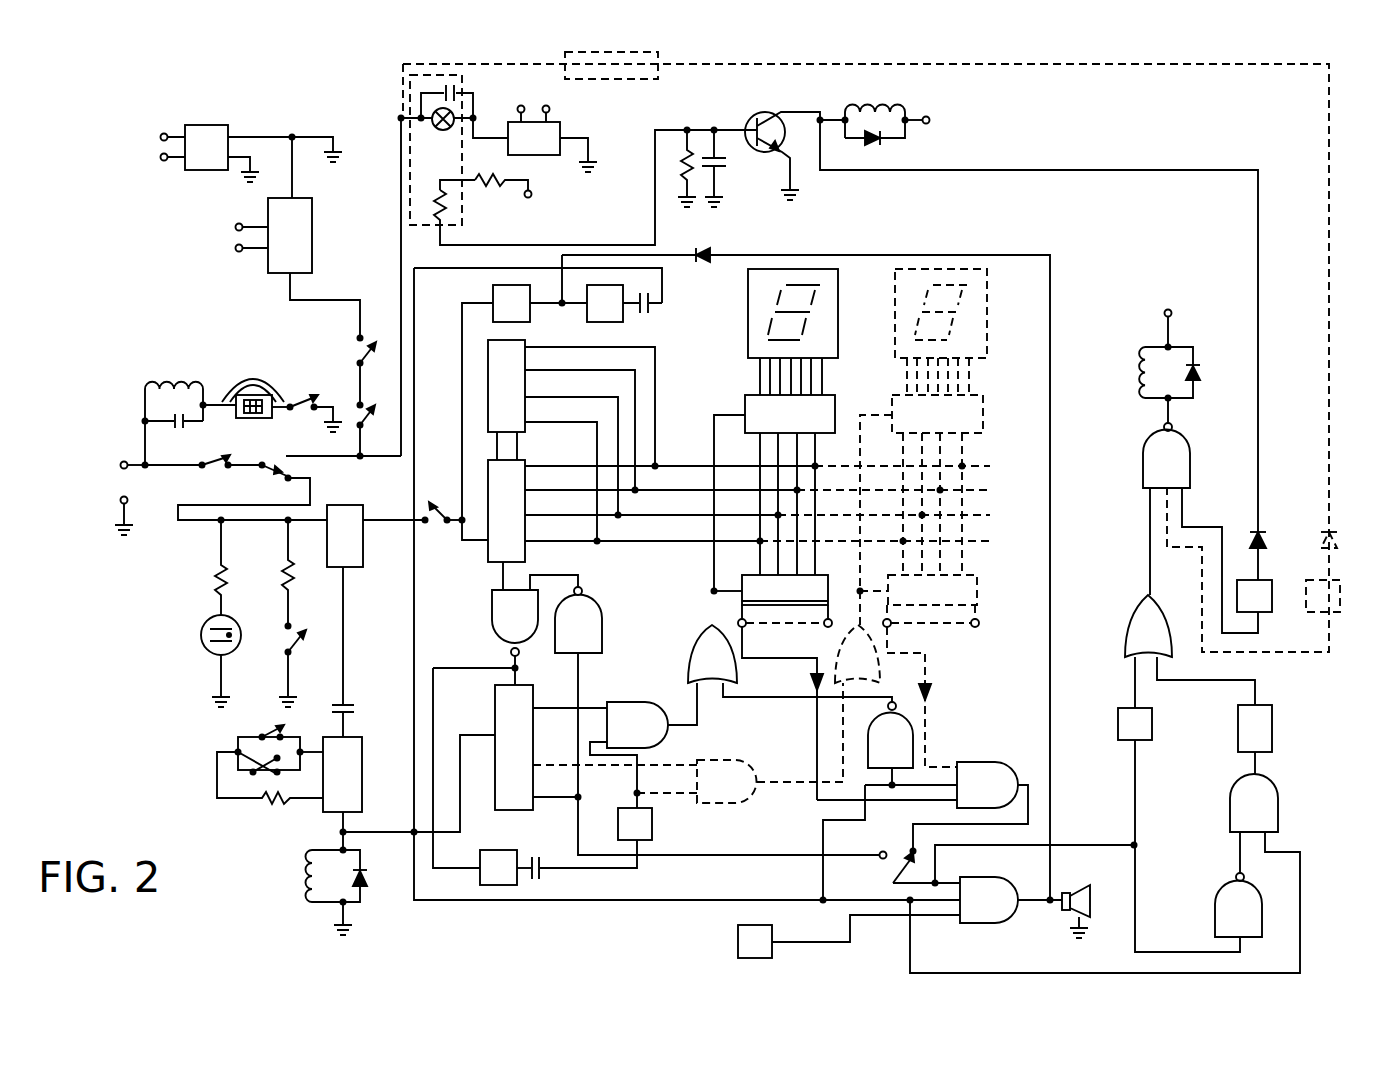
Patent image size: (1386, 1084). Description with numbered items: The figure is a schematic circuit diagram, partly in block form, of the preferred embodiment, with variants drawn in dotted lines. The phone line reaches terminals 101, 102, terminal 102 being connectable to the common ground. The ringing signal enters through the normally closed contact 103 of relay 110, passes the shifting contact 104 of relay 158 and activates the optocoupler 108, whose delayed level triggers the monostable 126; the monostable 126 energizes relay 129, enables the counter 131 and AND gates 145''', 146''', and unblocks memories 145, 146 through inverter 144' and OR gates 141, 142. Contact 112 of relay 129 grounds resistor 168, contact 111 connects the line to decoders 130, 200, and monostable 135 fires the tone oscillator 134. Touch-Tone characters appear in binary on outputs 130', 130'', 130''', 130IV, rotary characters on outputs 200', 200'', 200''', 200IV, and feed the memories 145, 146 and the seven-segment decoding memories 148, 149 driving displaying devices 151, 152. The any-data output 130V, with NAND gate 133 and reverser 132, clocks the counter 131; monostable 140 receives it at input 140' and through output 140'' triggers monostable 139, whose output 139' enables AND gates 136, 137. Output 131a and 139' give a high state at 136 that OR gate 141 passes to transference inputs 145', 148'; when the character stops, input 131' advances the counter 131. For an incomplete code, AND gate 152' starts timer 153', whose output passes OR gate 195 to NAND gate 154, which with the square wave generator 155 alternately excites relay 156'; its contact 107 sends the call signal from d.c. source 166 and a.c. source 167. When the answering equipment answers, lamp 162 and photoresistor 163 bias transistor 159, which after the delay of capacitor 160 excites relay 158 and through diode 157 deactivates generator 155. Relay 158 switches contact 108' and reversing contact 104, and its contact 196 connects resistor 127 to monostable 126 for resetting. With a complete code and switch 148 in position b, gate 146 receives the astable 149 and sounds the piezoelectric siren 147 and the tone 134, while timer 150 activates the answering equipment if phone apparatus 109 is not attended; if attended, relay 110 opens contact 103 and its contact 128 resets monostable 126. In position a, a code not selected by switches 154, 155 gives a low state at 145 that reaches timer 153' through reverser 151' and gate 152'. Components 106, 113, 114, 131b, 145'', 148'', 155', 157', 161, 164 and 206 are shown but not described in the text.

The terminal 101 is at (122, 462).
The terminal 102 is at (120, 500).
The normally closed contact 103 is at (212, 460).
The shifting contact 104 is at (266, 476).
The switch 106 is at (300, 400).
The normally open contact 107 is at (358, 349).
The optocoupler 108 is at (376, 552).
The normally closed contact 108' is at (346, 416).
The phone apparatus 109 is at (250, 424).
The relay 110 is at (174, 386).
The normally open contact 111 is at (444, 514).
The normally open contact 112 is at (306, 665).
The resistor 113 is at (214, 572).
The meter 114 is at (200, 639).
The monostable 126 is at (356, 756).
The resistor 127 is at (270, 793).
The normally open contact 128 is at (238, 752).
The relay 129 is at (312, 869).
The decoder 130 is at (476, 512).
The decoder output 130' is at (757, 450).
The decoder output 130'' is at (757, 476).
The decoder output 130''' is at (757, 502).
The decoder output 130IV is at (587, 540).
The any data output 130V is at (506, 582).
The counter 131 is at (488, 744).
The counter input 131' is at (476, 753).
The counter output 131a is at (590, 706).
The flip-flop output 131b is at (582, 767).
The reverser 132 is at (590, 607).
The NAND gate 133 is at (498, 607).
The tone oscillator 134 is at (493, 298).
The monostable 135 is at (615, 310).
The AND gate 136 is at (670, 730).
The AND gate 137 is at (742, 776).
The monostable 139 is at (616, 843).
The monostable output 139' is at (694, 814).
The monostable 140 is at (505, 897).
The monostable input 140' is at (443, 881).
The monostable output 140'' is at (503, 839).
The OR gate 141 is at (695, 652).
The OR gate 142 is at (896, 696).
The inverter 144' is at (903, 800).
The memory 145 is at (770, 574).
The transference input 145' is at (691, 609).
The comparator 145'' is at (887, 586).
The AND gate 145''' is at (927, 787).
The memory 146 is at (960, 519).
The AND gate 146''' is at (1104, 902).
The piezoelectric siren 147 is at (1083, 886).
The seven-segment decoding memory 148 is at (939, 627).
The transference input 148' is at (717, 484).
The decoder connection 148'' is at (872, 492).
The seven-segment decoding memory 149 is at (738, 942).
The timer 150 is at (1120, 728).
The displaying device 151 is at (772, 332).
The reverser 151' is at (1221, 899).
The displaying device 152 is at (966, 313).
The AND gate 152' is at (1285, 816).
The timer 153' is at (1245, 704).
The NAND gate 154 is at (746, 639).
The square wave generator 155 is at (1094, 570).
The block 155' is at (1346, 615).
The relay 156' is at (1146, 342).
The diode 157 is at (1279, 520).
The diode 157' is at (1353, 520).
The relay 158 is at (905, 170).
The transistor 159 is at (760, 112).
The capacitor 160 is at (720, 168).
The capacitor 161 is at (440, 90).
The lamp 162 is at (430, 112).
The photoresistor 163 is at (450, 210).
The potentiometer 164 is at (498, 172).
The d.c. current source 166 is at (203, 123).
The a.c. current source 167 is at (310, 232).
The resistor 168 is at (280, 576).
The OR gate 195 is at (1138, 618).
The normally open contact 196 is at (260, 732).
The decoder 200 is at (474, 389).
The decoder output 200' is at (590, 395).
The decoder output 200'' is at (580, 419).
The decoder output 200''' is at (571, 444).
The decoder output 200IV is at (595, 424).
The block 206 is at (656, 76).